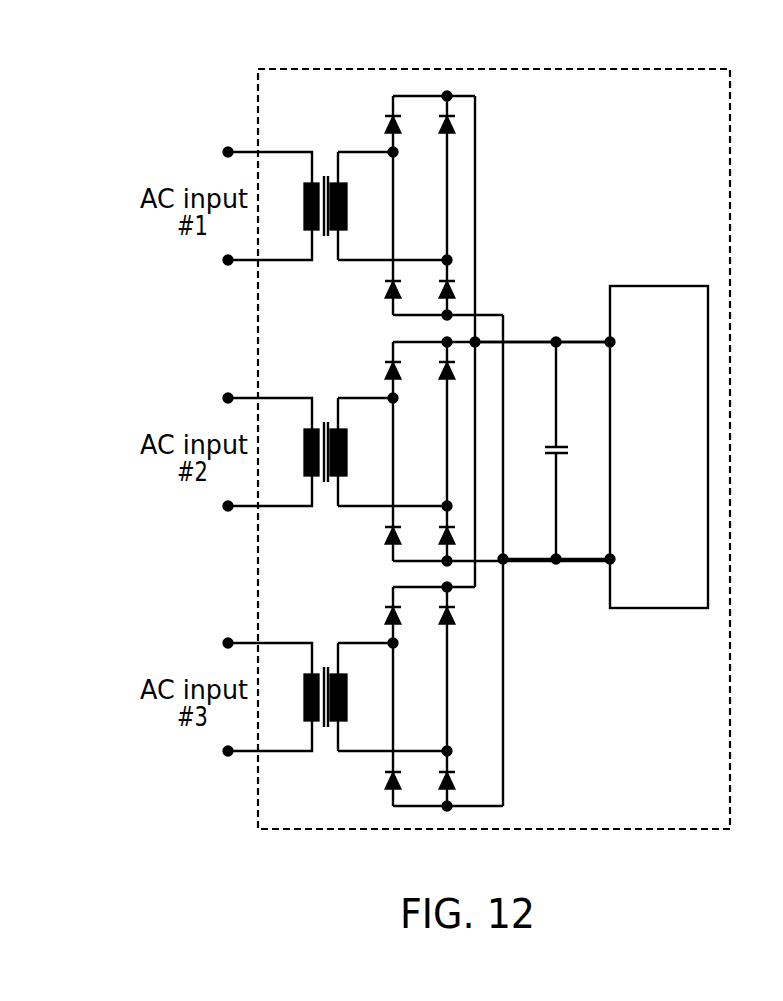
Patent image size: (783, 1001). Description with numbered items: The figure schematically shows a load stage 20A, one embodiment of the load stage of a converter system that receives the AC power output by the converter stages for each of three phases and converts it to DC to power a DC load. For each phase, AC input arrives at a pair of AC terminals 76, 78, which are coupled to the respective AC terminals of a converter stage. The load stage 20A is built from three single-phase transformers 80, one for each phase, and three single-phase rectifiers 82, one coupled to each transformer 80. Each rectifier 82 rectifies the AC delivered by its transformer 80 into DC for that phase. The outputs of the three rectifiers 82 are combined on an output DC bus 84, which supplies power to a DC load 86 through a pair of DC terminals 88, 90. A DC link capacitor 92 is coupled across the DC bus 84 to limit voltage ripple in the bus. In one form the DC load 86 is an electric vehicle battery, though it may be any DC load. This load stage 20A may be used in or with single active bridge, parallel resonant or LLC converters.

The load stage 20A is at (656, 68).
The AC terminal 76 is at (228, 147).
The AC terminal 78 is at (228, 265).
The single-phase transformer 80 is at (332, 138).
The single-phase rectifier 82 is at (521, 198).
The output DC bus 84 is at (602, 265).
The DC load 86 is at (673, 411).
The DC terminal 88 is at (614, 342).
The DC terminal 90 is at (614, 559).
The DC link capacitor 92 is at (566, 445).